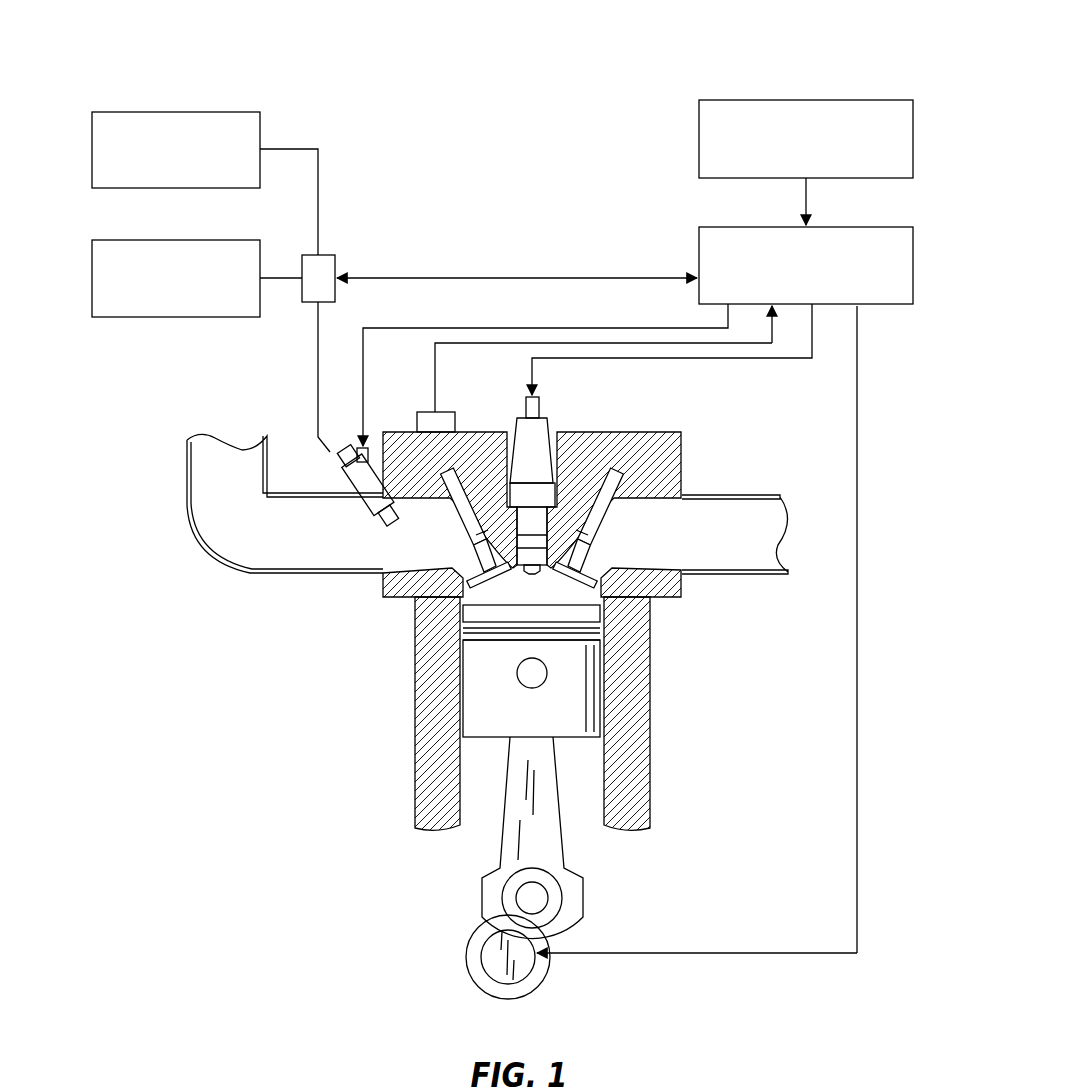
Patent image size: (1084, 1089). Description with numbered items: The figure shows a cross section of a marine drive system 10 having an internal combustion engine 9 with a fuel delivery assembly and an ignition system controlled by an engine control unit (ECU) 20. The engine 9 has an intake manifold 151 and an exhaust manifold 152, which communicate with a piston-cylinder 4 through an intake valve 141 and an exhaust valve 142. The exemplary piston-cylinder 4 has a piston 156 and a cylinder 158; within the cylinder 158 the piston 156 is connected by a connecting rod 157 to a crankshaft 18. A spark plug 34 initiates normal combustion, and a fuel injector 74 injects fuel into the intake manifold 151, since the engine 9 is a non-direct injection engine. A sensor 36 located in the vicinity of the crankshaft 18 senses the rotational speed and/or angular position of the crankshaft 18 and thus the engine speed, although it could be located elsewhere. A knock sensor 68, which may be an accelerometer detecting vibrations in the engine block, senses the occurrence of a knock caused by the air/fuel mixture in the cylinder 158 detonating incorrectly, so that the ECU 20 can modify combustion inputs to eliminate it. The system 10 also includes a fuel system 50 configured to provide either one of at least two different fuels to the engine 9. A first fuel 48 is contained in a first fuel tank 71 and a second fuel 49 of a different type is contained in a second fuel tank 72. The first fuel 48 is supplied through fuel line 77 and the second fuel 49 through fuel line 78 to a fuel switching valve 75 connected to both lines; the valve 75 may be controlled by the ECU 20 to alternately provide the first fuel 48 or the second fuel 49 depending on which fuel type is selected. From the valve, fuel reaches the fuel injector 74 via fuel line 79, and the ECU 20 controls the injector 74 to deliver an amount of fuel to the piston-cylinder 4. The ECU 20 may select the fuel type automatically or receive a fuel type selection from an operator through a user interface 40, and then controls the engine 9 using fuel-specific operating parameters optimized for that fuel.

The marine drive system 10 is at (657, 62).
The fuel system 50 is at (338, 113).
The first fuel tank 71 is at (172, 112).
The second fuel tank 72 is at (177, 240).
The first fuel 48 is at (147, 170).
The second fuel 49 is at (147, 298).
The fuel line 77 is at (320, 207).
The fuel line 78 is at (290, 273).
The fuel switching valve 75 is at (335, 260).
The fuel line 79 is at (318, 343).
The user interface 40 is at (699, 133).
The engine control unit (ECU) 20 is at (699, 252).
The intake manifold 151 is at (207, 547).
The exhaust manifold 152 is at (733, 493).
The engine 9 is at (393, 691).
The piston 156 is at (483, 740).
The cylinder 158 is at (590, 775).
The intake valve 141 is at (492, 590).
The exhaust valve 142 is at (592, 557).
The spark plug 34 is at (548, 432).
The knock sensor 68 is at (440, 412).
The fuel injector 74 is at (332, 450).
The piston-cylinder 4 is at (602, 613).
The connecting rod 157 is at (565, 848).
The crankshaft 18 is at (478, 937).
The sensor 36 is at (488, 977).